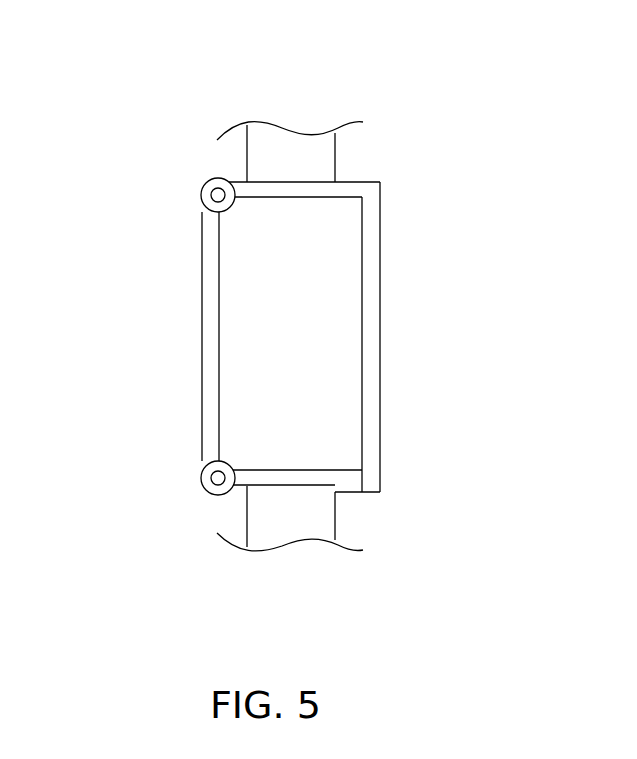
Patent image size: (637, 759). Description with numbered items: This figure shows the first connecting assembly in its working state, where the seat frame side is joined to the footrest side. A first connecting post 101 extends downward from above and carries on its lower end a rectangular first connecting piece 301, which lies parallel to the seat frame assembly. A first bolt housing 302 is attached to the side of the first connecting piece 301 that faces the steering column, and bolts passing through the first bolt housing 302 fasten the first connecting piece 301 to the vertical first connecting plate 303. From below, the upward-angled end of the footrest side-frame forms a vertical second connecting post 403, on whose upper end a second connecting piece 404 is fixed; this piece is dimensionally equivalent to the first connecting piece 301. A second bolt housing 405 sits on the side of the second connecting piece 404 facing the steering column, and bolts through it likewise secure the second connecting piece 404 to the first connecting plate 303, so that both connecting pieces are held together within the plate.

The first connecting post 101 is at (273, 158).
The first connecting piece 301 is at (216, 197).
The first bolt housing 302 is at (364, 200).
The first connecting plate 303 is at (210, 355).
The second connecting post 403 is at (302, 520).
The second connecting piece 404 is at (302, 480).
The second bolt housing 405 is at (216, 480).